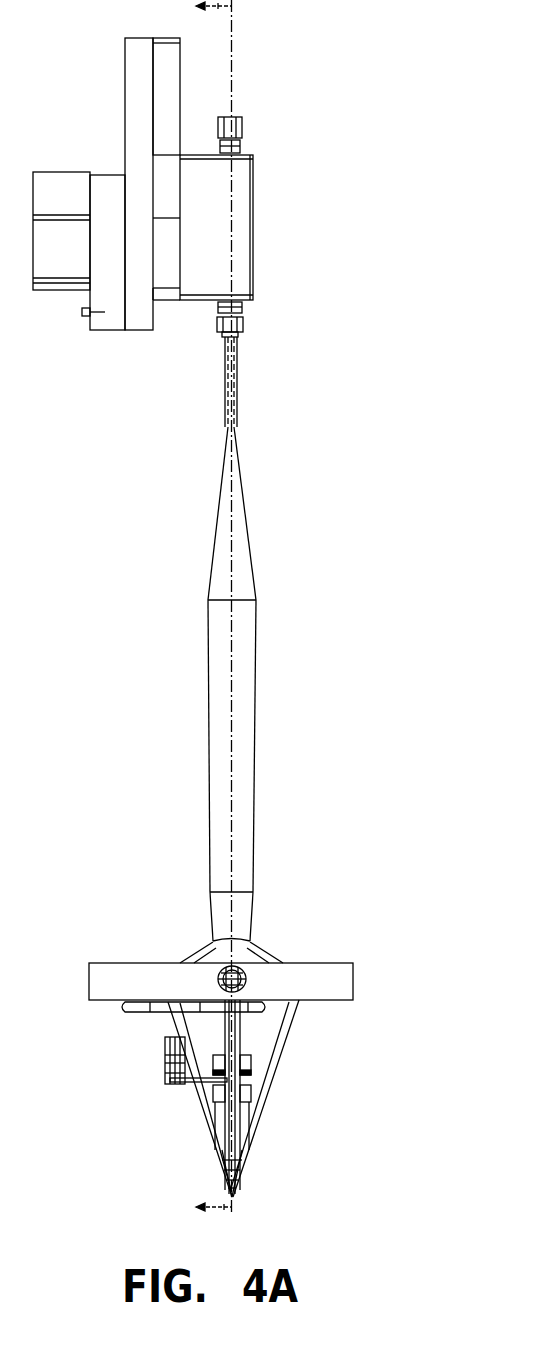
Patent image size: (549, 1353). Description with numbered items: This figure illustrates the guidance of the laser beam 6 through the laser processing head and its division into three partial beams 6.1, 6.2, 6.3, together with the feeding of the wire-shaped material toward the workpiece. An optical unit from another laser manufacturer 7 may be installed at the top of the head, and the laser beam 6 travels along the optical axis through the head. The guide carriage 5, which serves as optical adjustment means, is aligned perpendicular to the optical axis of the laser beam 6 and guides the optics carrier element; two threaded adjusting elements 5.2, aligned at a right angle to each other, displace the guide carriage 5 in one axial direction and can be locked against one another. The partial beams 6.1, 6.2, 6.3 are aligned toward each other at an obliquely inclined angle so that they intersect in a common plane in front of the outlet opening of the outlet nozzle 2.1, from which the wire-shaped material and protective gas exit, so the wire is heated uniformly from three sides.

The other optical units from other laser manufacturers 7 is at (233, 203).
The laser beam 6 is at (238, 722).
The guide carriage 5 is at (315, 972).
The adjusting elements 5.2 is at (218, 978).
The partial beam 6.1 is at (283, 1030).
The partial beam 6.2 is at (195, 1100).
The partial beam 6.3 is at (233, 1045).
The outlet nozzle 2.1 is at (240, 1140).